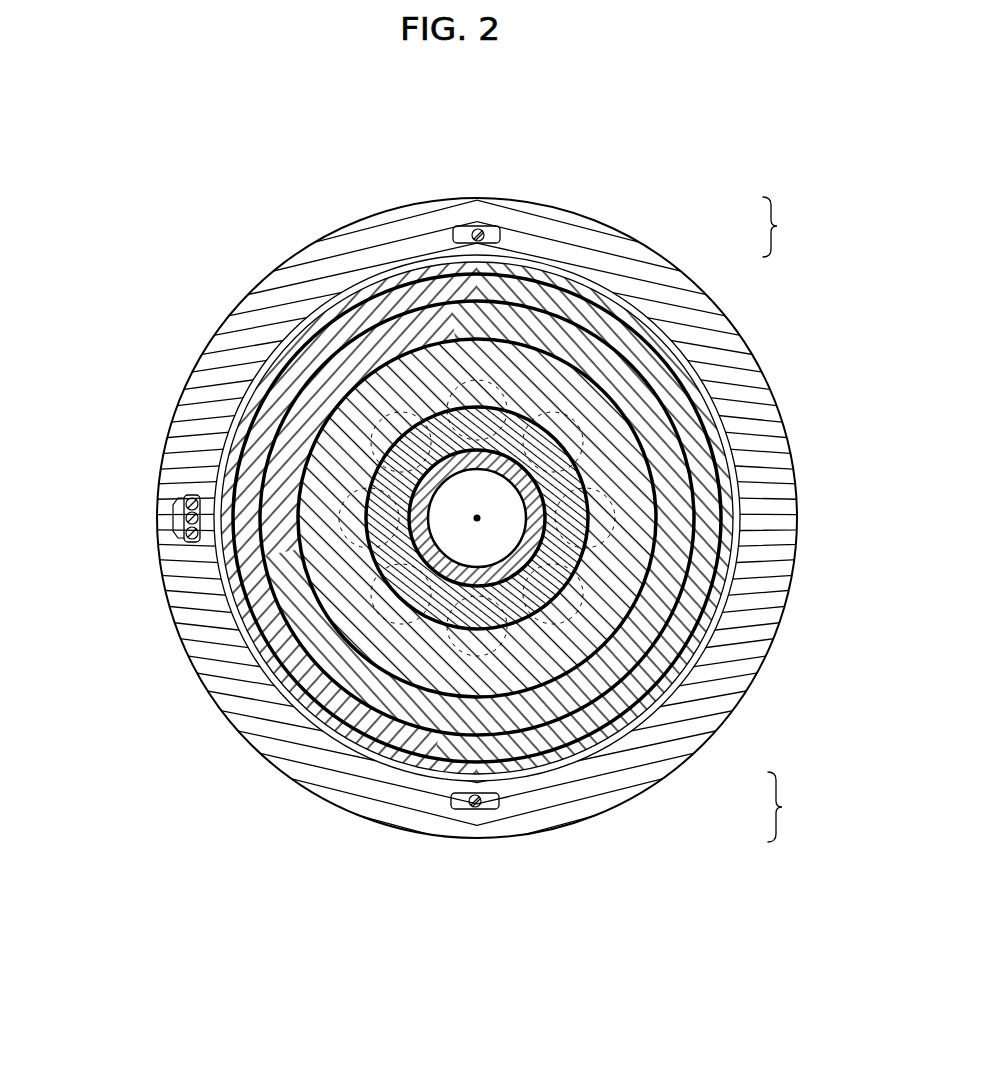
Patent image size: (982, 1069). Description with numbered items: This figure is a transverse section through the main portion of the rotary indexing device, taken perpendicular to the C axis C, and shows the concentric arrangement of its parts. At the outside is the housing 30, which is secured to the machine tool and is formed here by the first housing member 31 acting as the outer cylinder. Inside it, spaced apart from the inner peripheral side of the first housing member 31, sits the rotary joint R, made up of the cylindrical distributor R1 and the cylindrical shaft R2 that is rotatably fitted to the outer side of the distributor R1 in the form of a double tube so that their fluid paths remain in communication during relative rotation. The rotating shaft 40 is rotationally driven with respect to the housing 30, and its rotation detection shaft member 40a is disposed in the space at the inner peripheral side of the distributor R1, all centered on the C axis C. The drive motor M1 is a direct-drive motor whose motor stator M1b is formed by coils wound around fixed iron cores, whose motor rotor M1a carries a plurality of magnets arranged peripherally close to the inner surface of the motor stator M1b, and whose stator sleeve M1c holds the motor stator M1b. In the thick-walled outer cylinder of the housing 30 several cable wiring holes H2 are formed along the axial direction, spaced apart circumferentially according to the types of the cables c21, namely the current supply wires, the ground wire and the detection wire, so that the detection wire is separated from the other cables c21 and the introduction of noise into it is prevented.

The housing 30 is at (491, 523).
The first housing member 31 is at (287, 776).
The rotating shaft 40 is at (568, 507).
The rotation detection shaft member 40a is at (544, 486).
The rotary joint R is at (514, 480).
The distributor R1 is at (494, 485).
The shaft of rotary joint R2 is at (508, 483).
The drive motor M1 is at (521, 558).
The motor rotor M1a is at (514, 544).
The motor stator M1b is at (495, 541).
The stator sleeve M1c is at (493, 558).
The cable wiring hole H2 is at (497, 230).
The cables c21 is at (478, 232).
The C axis C is at (309, 377).